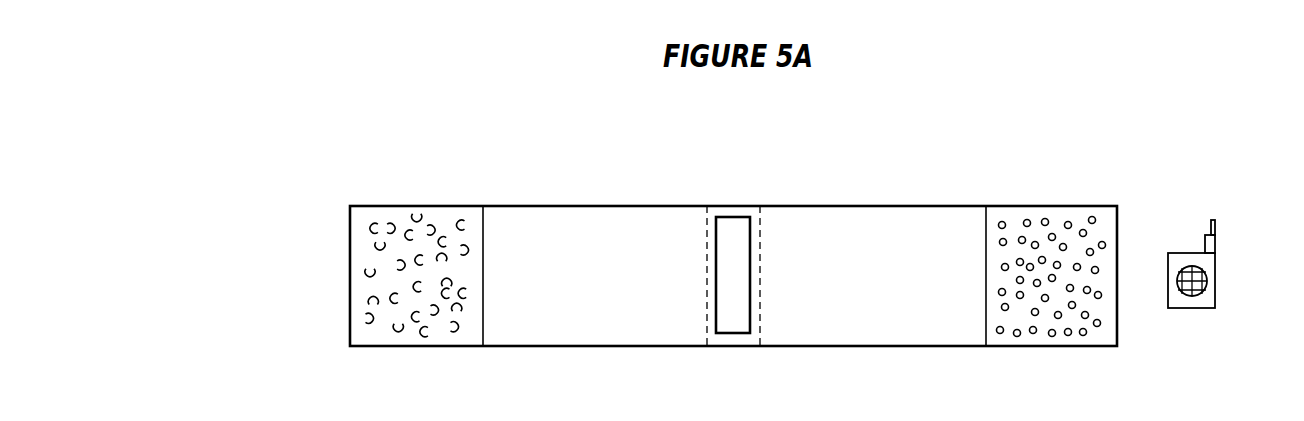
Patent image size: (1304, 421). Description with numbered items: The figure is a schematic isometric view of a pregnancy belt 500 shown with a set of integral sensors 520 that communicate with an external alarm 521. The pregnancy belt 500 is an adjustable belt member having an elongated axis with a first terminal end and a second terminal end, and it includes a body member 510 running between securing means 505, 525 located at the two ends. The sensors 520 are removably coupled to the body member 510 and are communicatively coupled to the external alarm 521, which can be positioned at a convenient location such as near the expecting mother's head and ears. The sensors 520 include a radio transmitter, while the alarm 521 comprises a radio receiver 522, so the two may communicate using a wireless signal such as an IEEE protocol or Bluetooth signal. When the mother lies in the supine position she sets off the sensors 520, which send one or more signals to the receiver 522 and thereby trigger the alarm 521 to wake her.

The pregnancy belt 500 is at (317, 145).
The securing means 505 is at (437, 206).
The body member 510 is at (598, 206).
The set of integral sensors 520 is at (733, 239).
The securing means 525 is at (1057, 206).
The external alarm 521 is at (1217, 281).
The radio receiver 522 is at (1217, 228).